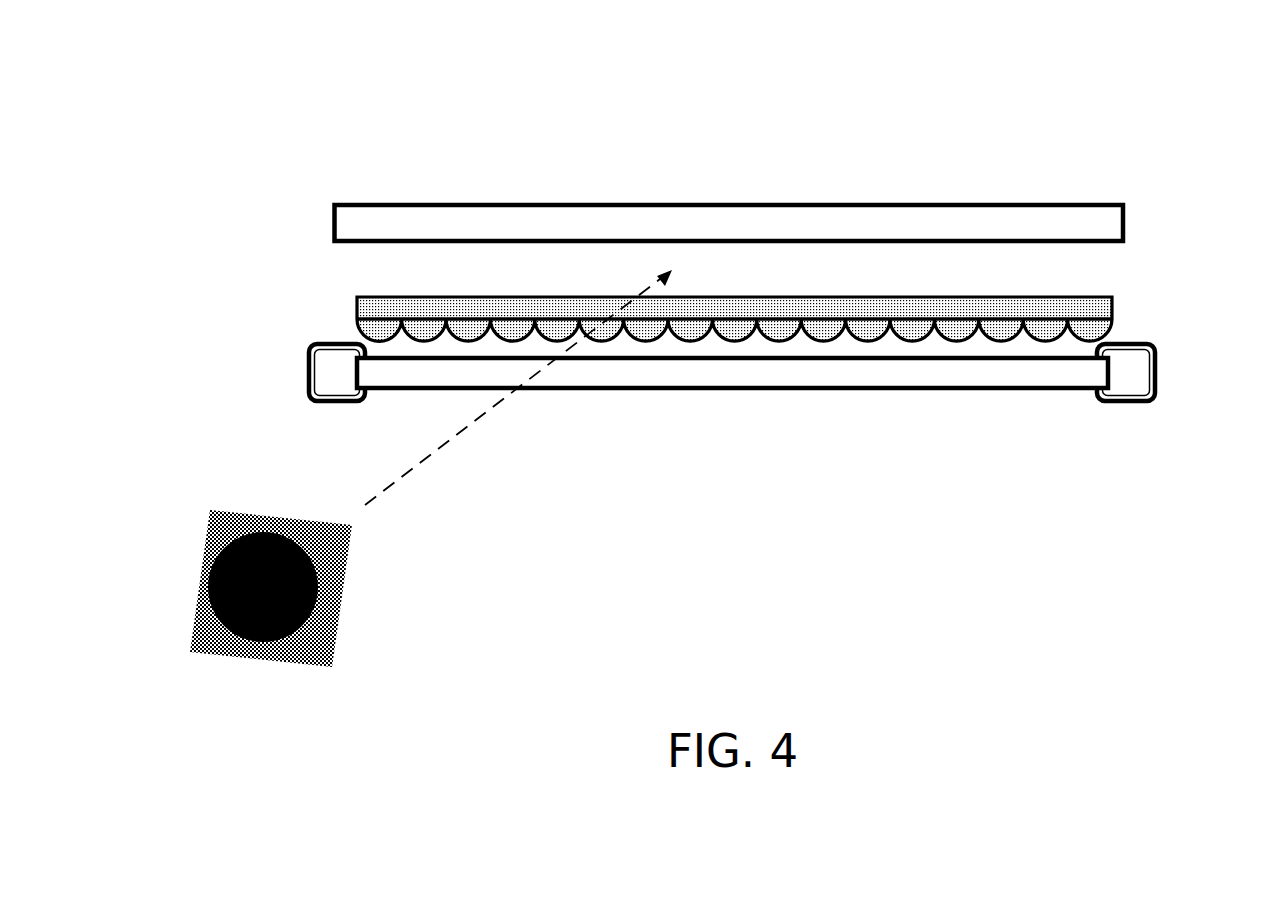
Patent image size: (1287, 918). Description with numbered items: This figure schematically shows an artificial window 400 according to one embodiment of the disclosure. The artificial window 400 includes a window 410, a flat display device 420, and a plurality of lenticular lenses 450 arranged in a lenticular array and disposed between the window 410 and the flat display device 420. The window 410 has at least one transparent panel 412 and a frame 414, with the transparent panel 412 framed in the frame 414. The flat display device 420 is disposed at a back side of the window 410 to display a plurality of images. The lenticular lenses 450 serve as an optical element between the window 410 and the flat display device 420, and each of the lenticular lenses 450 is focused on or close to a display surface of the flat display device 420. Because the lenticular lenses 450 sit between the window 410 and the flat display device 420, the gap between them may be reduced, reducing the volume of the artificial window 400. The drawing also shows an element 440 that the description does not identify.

The artificial window 400 is at (135, 50).
The window 410 is at (778, 430).
The transparent panel 412 is at (918, 392).
The frame 414 is at (1147, 400).
The flat display device 420 is at (1067, 202).
The light source 440 is at (227, 540).
The lenticular lenses 450 is at (1105, 298).